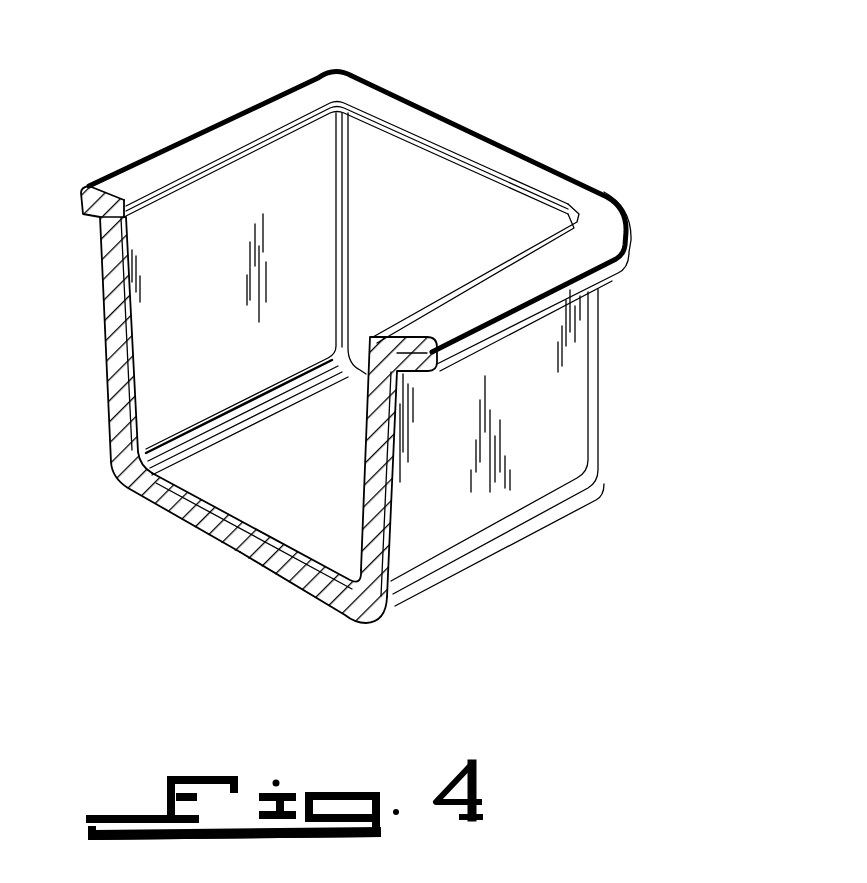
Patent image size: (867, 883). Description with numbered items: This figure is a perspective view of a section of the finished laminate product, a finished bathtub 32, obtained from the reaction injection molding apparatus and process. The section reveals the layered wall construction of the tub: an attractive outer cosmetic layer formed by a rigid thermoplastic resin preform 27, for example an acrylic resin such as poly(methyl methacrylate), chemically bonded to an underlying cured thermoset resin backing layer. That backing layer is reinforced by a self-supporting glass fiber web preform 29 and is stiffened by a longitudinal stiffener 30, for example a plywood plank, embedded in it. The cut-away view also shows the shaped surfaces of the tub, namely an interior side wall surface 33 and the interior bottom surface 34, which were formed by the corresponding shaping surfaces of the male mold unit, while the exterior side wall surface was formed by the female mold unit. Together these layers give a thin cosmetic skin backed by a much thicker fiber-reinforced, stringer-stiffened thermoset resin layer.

The finished bathtub 32 is at (433, 85).
The interior side wall surface 33 is at (194, 285).
The interior bottom surface 34 is at (294, 498).
The rigid thermoplastic resin preform 27 is at (136, 483).
The longitudinal stiffener 30 is at (232, 550).
The self-supporting glass fiber web preform 29 is at (303, 590).